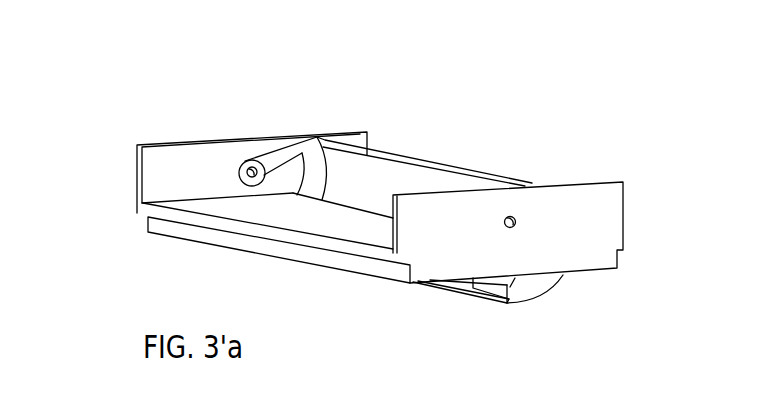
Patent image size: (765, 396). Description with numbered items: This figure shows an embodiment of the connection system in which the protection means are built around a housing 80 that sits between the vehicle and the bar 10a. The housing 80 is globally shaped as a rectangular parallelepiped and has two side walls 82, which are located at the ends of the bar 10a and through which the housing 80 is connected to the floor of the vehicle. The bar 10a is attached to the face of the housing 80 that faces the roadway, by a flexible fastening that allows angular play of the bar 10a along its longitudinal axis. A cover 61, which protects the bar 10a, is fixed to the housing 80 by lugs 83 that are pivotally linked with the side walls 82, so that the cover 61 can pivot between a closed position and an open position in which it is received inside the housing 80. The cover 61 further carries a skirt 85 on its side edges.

The housing 80 is at (153, 210).
The side walls 82 is at (360, 142).
The lugs 83 is at (287, 155).
The cover 61 is at (447, 290).
The bar 10a is at (482, 283).
The skirt 85 is at (535, 288).